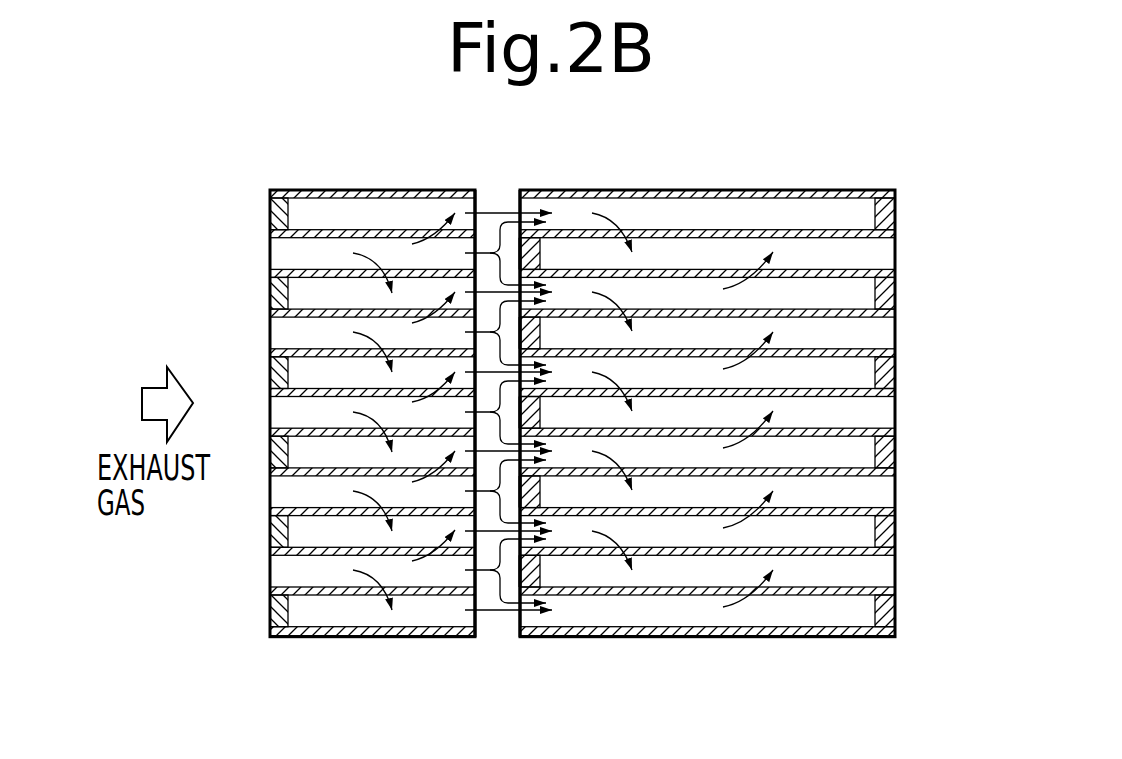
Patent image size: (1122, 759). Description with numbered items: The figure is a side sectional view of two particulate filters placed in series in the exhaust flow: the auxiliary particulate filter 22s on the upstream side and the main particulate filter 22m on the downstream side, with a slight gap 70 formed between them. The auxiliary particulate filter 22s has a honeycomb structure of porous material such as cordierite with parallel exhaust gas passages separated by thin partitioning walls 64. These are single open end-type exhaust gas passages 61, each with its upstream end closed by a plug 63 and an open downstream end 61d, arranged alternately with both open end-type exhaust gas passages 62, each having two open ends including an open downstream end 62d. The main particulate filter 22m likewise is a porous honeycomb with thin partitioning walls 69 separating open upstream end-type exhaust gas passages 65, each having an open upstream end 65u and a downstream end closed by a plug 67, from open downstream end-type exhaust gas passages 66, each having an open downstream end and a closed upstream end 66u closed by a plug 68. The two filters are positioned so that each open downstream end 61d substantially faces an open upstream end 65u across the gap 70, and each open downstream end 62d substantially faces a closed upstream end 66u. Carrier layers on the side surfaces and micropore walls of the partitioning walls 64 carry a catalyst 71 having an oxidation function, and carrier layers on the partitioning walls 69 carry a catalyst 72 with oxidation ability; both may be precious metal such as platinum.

The auxiliary particulate filter 22s is at (366, 188).
The main particulate filter 22m is at (774, 188).
The single open end-type exhaust gas passage 61 is at (328, 290).
The open downstream end 61d is at (465, 208).
The both open end-type exhaust gas passage 62 is at (317, 578).
The open downstream end 62d is at (458, 580).
The plug 63 is at (274, 290).
The partitioning wall 64 is at (338, 557).
The catalyst 71 is at (400, 220).
The open upstream end-type exhaust gas passage 65 is at (825, 293).
The open upstream end 65u is at (538, 192).
The open downstream end-type exhaust gas passage 66 is at (843, 582).
The closed upstream end 66u is at (565, 577).
The plug 67 is at (899, 290).
The plug 68 is at (533, 572).
The partitioning wall 69 is at (777, 560).
The catalyst 72 is at (686, 226).
The gap 70 is at (492, 624).